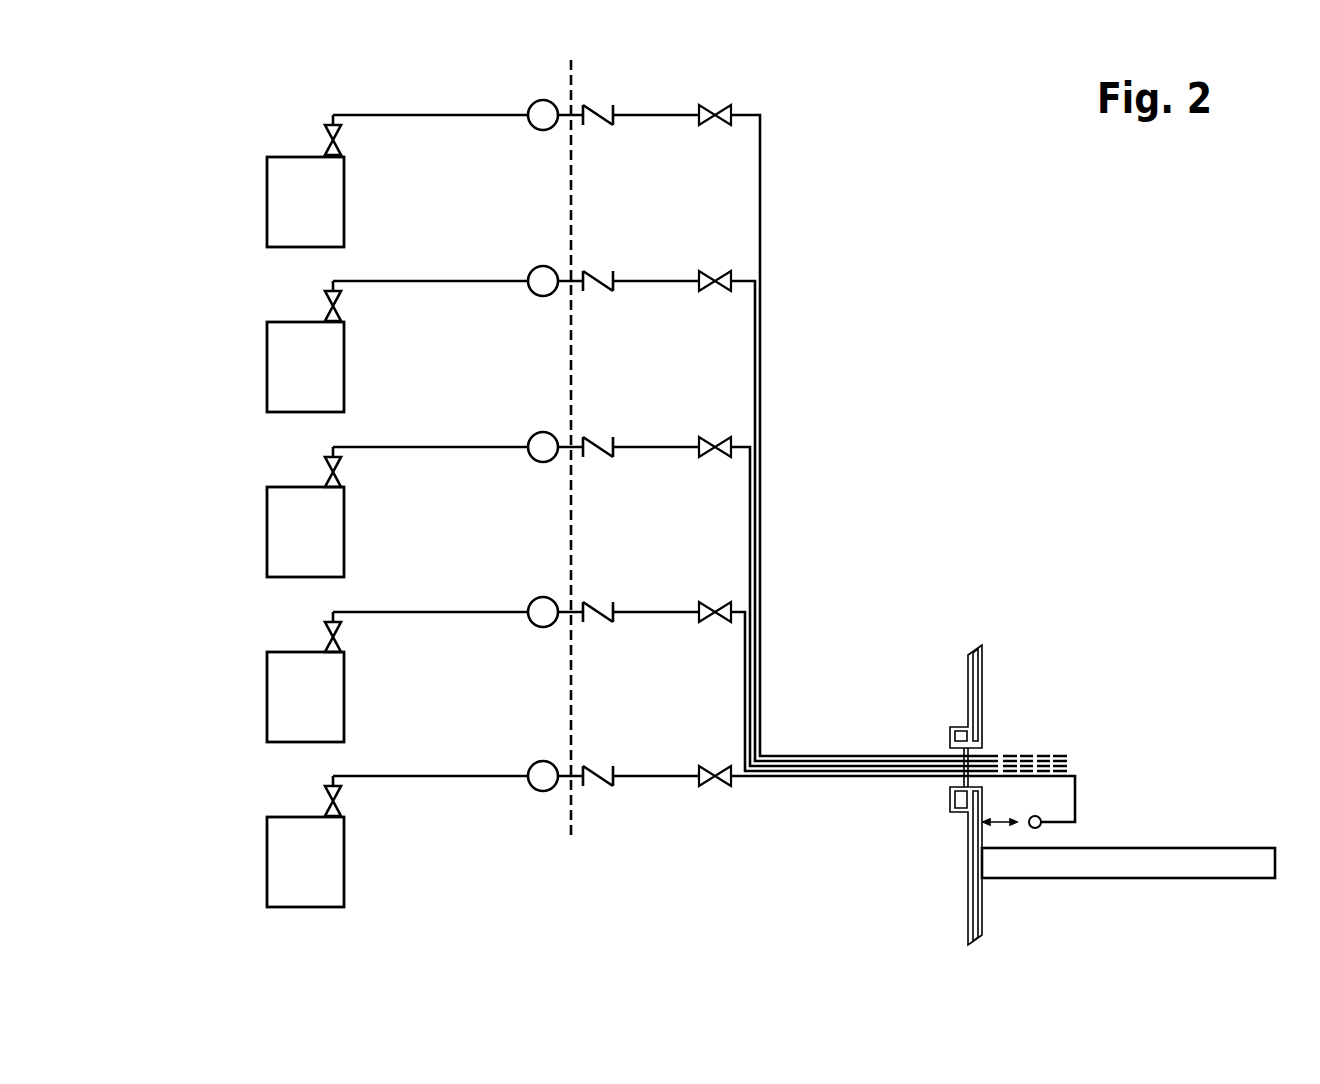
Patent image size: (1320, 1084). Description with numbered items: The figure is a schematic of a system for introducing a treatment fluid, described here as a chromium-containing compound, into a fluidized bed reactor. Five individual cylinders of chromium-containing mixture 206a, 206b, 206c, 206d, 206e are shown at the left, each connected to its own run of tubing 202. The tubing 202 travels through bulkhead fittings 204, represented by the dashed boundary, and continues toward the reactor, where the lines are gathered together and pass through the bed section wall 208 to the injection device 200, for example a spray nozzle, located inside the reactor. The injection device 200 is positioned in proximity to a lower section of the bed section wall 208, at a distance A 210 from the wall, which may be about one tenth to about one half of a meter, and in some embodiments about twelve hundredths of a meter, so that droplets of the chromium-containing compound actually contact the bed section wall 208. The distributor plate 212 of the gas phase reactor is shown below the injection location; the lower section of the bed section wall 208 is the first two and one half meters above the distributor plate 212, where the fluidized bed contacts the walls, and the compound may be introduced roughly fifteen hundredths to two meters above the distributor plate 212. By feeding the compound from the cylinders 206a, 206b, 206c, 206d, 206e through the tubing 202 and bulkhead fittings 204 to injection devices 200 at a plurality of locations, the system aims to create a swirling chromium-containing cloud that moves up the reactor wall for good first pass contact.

The injection device 200 is at (1035, 829).
The tubing 202 is at (772, 780).
The bulkhead fittings 204 is at (572, 373).
The cylinder of chromium-containing mixture 206a is at (267, 210).
The cylinder of chromium-containing mixture 206b is at (268, 362).
The cylinder of chromium-containing mixture 206c is at (267, 530).
The cylinder of chromium-containing mixture 206d is at (268, 690).
The cylinder of chromium-containing mixture 206e is at (268, 867).
The bed section wall 208 is at (980, 668).
The distance A 210 is at (1003, 823).
The distributor plate 212 is at (1187, 847).